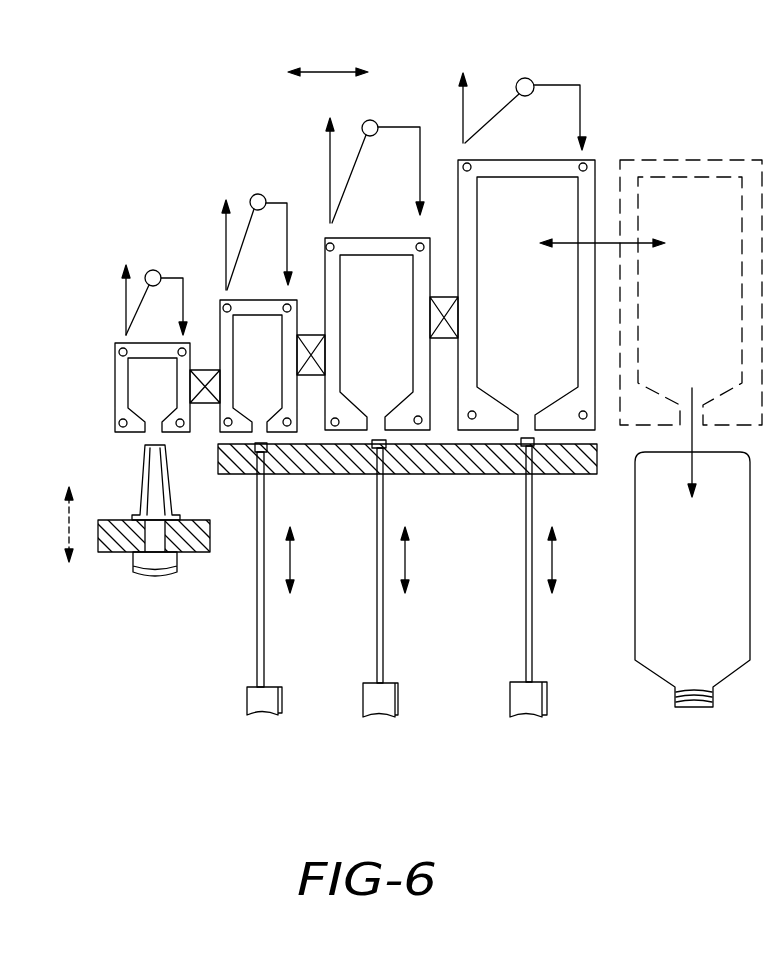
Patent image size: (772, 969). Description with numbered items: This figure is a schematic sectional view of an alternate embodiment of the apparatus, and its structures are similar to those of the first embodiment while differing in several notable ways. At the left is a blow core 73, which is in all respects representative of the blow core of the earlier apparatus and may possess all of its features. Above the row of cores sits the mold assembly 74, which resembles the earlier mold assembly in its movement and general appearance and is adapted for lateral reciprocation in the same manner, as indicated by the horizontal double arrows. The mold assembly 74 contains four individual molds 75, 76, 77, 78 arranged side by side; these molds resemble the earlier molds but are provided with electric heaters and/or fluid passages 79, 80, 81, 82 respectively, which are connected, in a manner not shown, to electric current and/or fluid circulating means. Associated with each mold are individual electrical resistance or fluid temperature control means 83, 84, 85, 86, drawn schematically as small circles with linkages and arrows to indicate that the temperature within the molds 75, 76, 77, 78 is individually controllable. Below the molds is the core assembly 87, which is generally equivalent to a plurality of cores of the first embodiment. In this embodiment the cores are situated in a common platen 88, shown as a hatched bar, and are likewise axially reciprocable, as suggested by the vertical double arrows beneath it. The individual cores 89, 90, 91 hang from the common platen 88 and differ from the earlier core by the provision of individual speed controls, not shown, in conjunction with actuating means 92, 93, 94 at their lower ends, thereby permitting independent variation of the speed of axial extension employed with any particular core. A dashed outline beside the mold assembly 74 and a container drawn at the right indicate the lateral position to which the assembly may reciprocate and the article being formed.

The blow core 73 is at (195, 550).
The mold assembly 74 is at (608, 100).
The individual mold 75 is at (123, 398).
The individual mold 76 is at (297, 317).
The individual mold 77 is at (430, 267).
The individual mold 78 is at (585, 197).
The electric heater and/or fluid passage 79 is at (120, 350).
The electric heater and/or fluid passage 80 is at (225, 306).
The electric heater and/or fluid passage 81 is at (328, 244).
The electric heater and/or fluid passage 82 is at (466, 164).
The electrical resistance or fluid temperature control means 83 is at (153, 270).
The electrical resistance or fluid temperature control means 84 is at (258, 194).
The electrical resistance or fluid temperature control means 85 is at (370, 120).
The electrical resistance or fluid temperature control means 86 is at (525, 78).
The core assembly 87 is at (555, 485).
The common platen 88 is at (588, 462).
The individual core 89 is at (262, 658).
The individual core 90 is at (380, 657).
The individual core 91 is at (525, 650).
The actuating means 92 is at (140, 480).
The actuating means 93 is at (390, 705).
The actuating means 94 is at (537, 707).